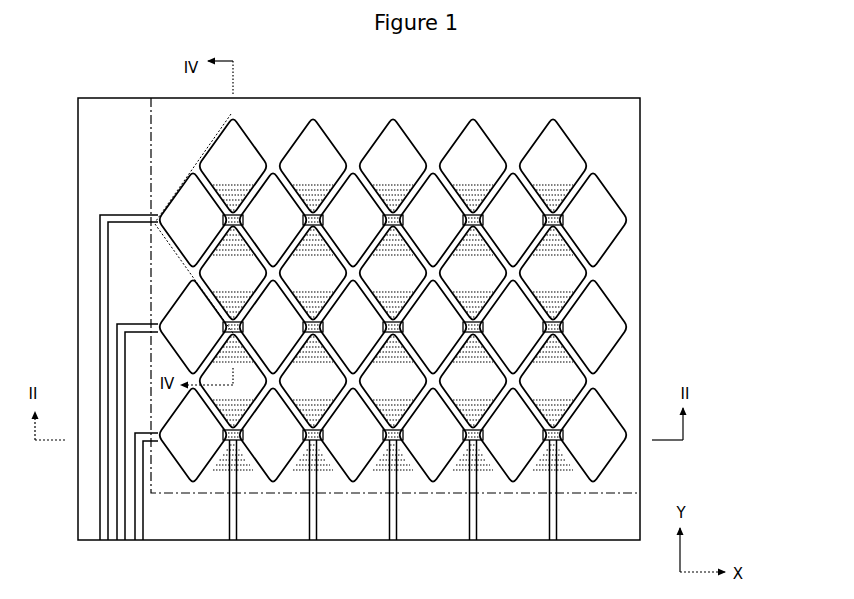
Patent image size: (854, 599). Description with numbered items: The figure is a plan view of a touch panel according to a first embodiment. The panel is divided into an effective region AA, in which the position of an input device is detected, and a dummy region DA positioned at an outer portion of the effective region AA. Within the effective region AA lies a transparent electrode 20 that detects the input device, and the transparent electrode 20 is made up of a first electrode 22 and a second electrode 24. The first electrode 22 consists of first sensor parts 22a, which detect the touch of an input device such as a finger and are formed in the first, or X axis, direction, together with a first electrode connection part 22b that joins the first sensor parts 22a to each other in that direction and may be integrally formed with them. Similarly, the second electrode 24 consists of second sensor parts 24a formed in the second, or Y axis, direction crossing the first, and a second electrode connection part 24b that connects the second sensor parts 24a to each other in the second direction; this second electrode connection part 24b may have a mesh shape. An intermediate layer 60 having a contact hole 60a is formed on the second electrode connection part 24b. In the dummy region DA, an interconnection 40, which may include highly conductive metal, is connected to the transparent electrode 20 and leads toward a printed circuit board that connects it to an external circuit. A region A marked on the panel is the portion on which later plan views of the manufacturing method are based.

The transparent electrode 20 is at (463, 329).
The first electrode 22 is at (445, 356).
The first sensor part 22a is at (610, 209).
The first electrode connection part 22b is at (560, 237).
The second electrode 24 is at (465, 273).
The second sensor part 24a is at (558, 140).
The second electrode connection part 24b is at (560, 180).
The interconnection 40 is at (100, 302).
The intermediate layer 60 is at (179, 125).
The contact hole 60a is at (228, 183).
The dummy region DA is at (94, 336).
The effective region AA is at (352, 115).
The region A is at (262, 142).